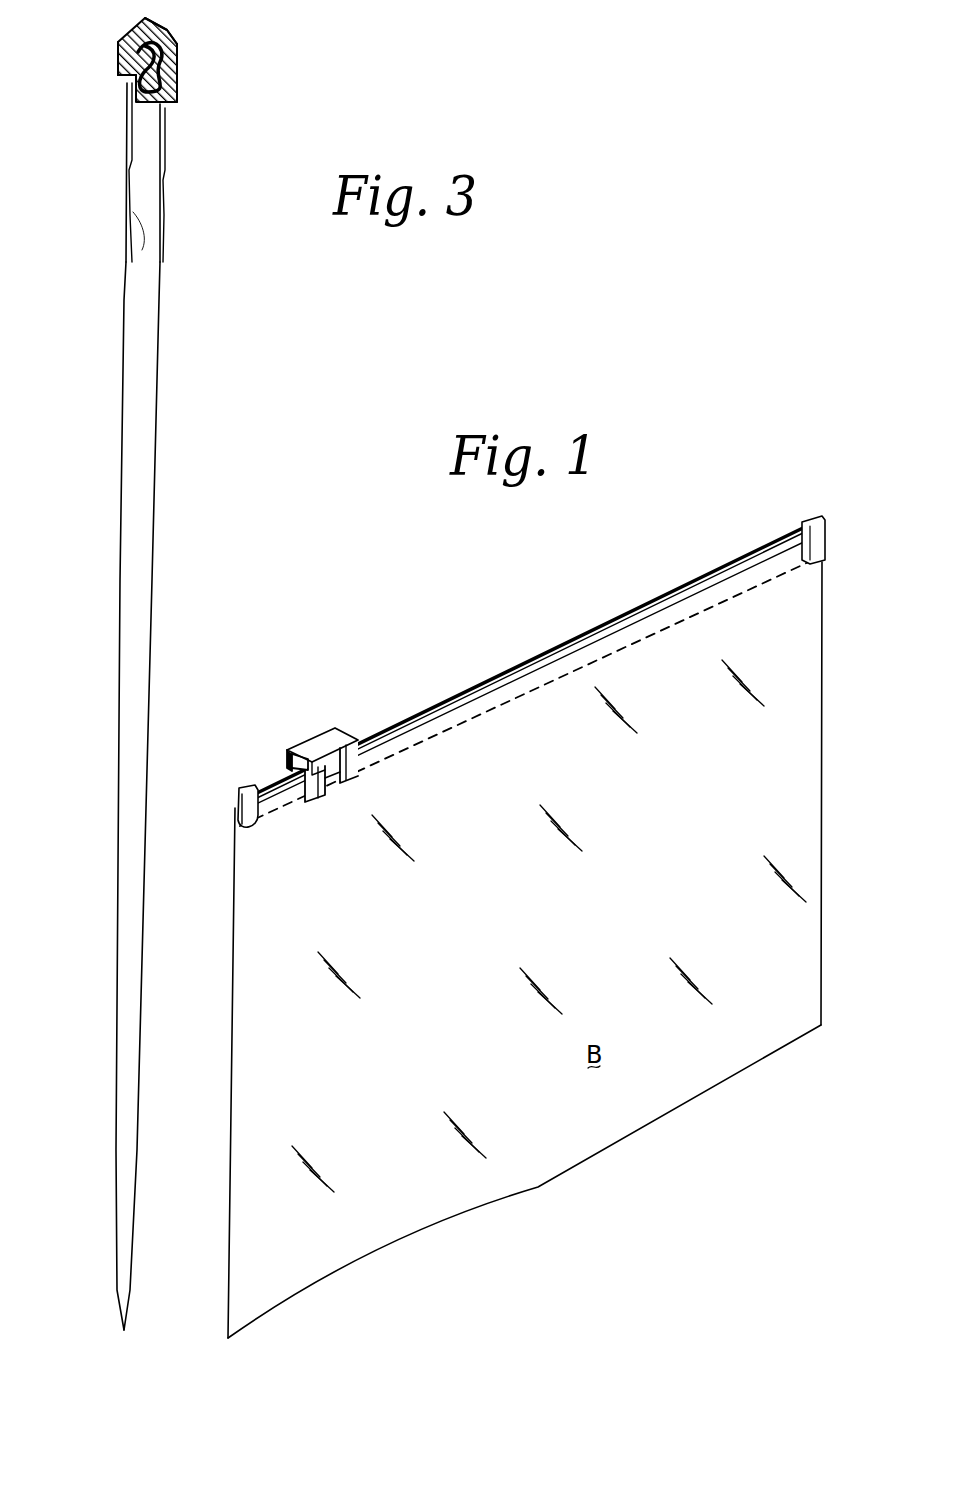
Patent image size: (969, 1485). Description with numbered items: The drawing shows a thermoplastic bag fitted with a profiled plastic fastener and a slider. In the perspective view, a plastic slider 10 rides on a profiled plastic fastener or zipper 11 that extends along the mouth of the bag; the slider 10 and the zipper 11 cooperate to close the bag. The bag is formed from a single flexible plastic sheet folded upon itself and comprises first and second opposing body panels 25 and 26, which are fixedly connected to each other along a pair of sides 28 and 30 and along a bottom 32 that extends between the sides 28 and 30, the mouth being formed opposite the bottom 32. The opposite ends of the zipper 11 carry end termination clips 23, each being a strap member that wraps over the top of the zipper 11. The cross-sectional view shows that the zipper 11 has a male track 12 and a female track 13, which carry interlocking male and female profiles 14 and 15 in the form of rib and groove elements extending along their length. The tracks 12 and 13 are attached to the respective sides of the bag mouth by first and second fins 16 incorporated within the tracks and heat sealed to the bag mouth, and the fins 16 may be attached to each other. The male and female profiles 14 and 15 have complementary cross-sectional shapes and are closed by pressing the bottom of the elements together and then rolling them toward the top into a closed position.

In FIG. 1, the slider 10 is at (324, 726).
In FIG. 1, the zipper 11 is at (668, 592).
In FIG. 3, the male track 12 is at (108, 38).
In FIG. 3, the female track 13 is at (200, 52).
In FIG. 3, the male profile 14 is at (118, 70).
In FIG. 3, the female profile 15 is at (179, 78).
In FIG. 3, the fin 16 is at (133, 220).
In FIG. 1, the fin 16 is at (494, 712).
In FIG. 1, the end termination clip 23 is at (242, 788).
In FIG. 3, the first body panel 25 is at (126, 126).
In FIG. 3, the second body panel 26 is at (166, 140).
In FIG. 1, the side 28 is at (232, 1074).
In FIG. 1, the side 30 is at (821, 770).
In FIG. 1, the bottom 32 is at (540, 1188).